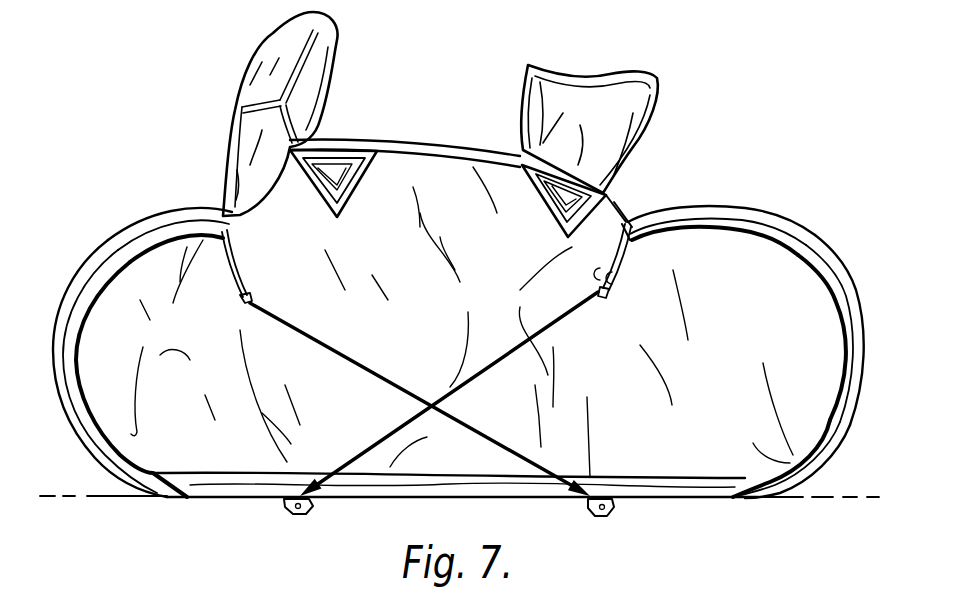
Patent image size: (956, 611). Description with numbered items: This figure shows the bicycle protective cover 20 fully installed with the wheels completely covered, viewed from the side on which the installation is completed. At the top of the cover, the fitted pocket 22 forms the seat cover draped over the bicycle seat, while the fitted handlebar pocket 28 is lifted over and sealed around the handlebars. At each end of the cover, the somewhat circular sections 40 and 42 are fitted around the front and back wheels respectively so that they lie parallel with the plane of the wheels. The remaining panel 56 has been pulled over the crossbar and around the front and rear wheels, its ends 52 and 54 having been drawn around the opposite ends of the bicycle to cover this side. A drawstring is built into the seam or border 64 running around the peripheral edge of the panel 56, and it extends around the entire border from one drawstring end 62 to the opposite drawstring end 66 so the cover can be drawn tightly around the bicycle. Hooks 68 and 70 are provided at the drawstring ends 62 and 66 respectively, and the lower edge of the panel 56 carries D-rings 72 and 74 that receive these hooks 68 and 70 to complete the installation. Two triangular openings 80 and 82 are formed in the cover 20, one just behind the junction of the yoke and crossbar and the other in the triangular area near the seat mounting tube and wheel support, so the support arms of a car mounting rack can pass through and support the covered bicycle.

The protective cover 20 is at (432, 341).
The fitted pocket 22 is at (660, 120).
The fitted handlebar pocket 28 is at (265, 47).
The circular section 40 is at (157, 212).
The circular section 42 is at (800, 472).
The end of remaining panel 52 is at (843, 275).
The end of remaining panel 54 is at (86, 262).
The remaining panel 56 is at (480, 497).
The drawstring end 62 is at (645, 260).
The seam or border 64 is at (777, 228).
The drawstring end 66 is at (243, 268).
The hook 68 is at (600, 297).
The hook 70 is at (240, 300).
The D-ring 72 is at (606, 517).
The D-ring 74 is at (290, 513).
The triangular opening 80 is at (340, 148).
The triangular opening 82 is at (610, 200).